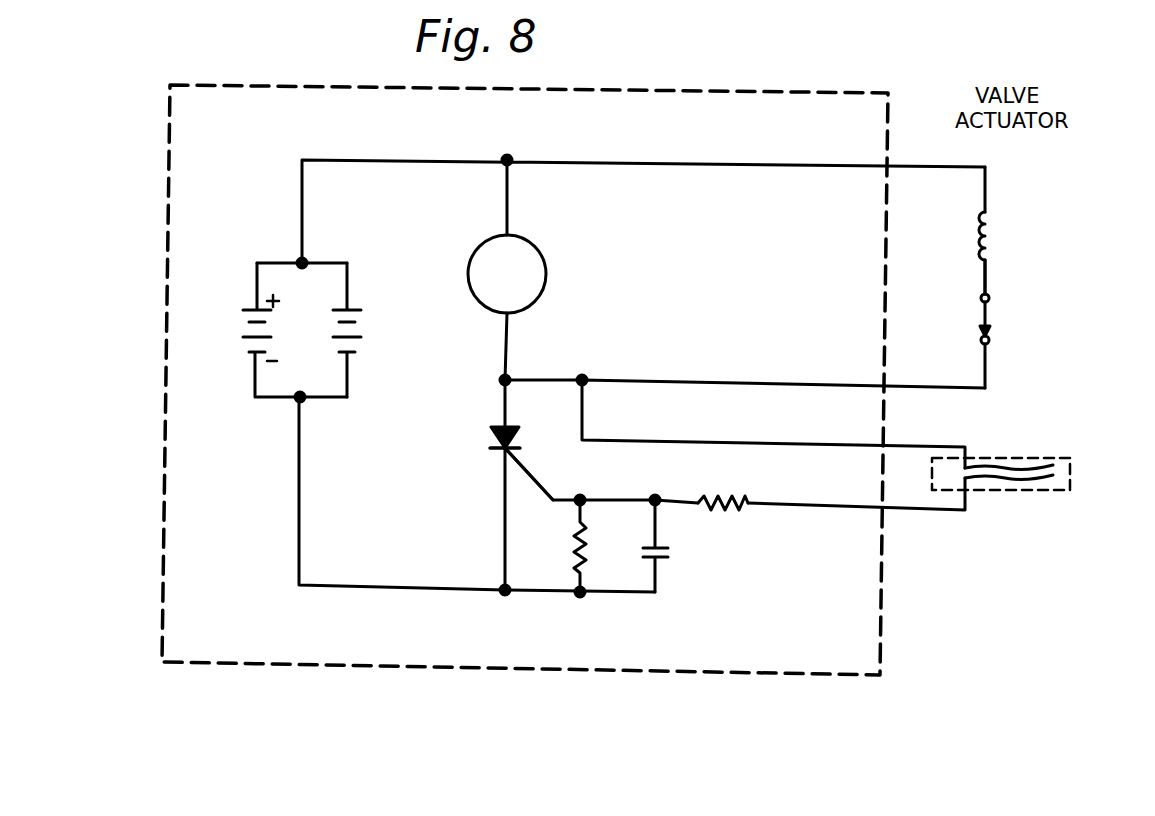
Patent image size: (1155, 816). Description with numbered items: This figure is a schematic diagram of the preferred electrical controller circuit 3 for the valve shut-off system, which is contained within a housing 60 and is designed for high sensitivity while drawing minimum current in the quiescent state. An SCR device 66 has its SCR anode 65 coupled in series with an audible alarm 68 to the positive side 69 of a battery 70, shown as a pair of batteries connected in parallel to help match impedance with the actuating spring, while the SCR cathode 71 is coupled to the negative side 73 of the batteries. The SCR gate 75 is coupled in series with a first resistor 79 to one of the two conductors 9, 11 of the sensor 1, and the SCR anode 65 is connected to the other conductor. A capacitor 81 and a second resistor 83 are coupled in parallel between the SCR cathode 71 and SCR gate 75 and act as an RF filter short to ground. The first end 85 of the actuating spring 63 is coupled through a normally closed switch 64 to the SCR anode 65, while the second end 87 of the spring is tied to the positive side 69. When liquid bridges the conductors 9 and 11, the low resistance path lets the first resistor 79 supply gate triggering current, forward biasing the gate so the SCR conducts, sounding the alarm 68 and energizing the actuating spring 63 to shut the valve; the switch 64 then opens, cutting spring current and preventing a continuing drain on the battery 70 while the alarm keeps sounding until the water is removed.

The sensor 1 is at (1088, 464).
The electrical controller circuit 3 is at (606, 79).
The conductor 9 is at (980, 486).
The conductor 11 is at (985, 465).
The housing 60 is at (882, 622).
The actuating spring 63 is at (1015, 218).
The switch 64 is at (1014, 312).
The SCR anode 65 is at (514, 430).
The SCR device 66 is at (466, 436).
The audible alarm 68 is at (558, 259).
The positive side 69 is at (305, 262).
The battery 70 is at (256, 309).
The SCR cathode 71 is at (498, 456).
The negative side 73 is at (298, 402).
The SCR gate 75 is at (520, 452).
The first resistor 79 is at (733, 494).
The capacitor 81 is at (662, 548).
The second resistor 83 is at (586, 540).
The first end 85 is at (988, 262).
The second end 87 is at (988, 216).